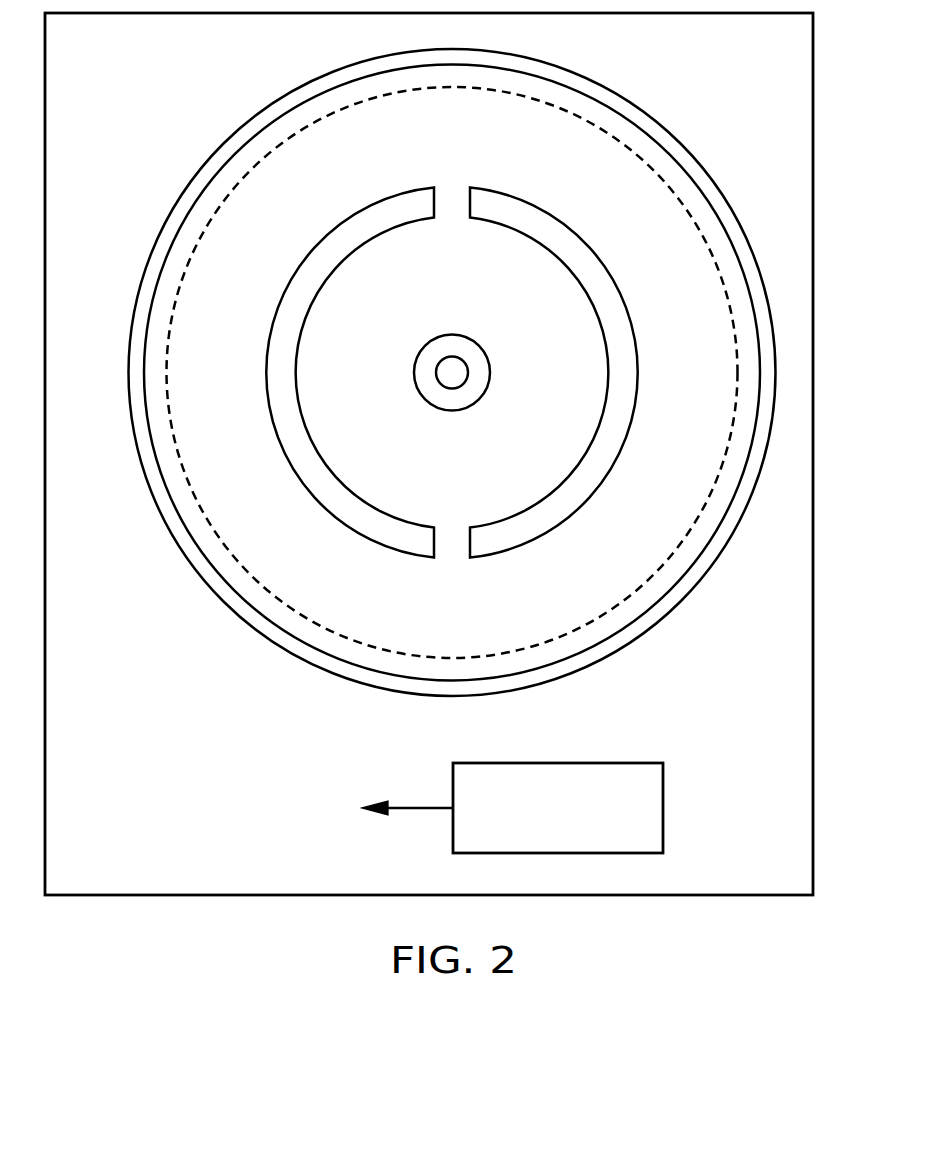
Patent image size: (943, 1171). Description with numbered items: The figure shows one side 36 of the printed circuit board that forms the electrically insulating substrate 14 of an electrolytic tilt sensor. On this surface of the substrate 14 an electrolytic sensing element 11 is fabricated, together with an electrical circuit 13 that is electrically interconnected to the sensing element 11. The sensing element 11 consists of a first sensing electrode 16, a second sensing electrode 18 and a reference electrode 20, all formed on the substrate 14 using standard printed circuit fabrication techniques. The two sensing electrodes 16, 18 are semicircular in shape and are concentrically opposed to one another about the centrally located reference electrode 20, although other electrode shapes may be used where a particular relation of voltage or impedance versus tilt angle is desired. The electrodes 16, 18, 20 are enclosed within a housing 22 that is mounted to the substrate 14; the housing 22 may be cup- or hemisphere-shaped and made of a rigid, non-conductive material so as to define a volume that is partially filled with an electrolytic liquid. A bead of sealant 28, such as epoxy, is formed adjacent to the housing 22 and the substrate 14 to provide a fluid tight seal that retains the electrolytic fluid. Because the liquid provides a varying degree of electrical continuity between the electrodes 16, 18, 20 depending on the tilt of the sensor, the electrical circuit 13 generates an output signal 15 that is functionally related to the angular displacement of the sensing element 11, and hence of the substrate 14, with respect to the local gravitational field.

The electrolytic sensing element 11 is at (512, 377).
The electrical circuit 13 is at (663, 808).
The electrically insulating substrate 14 is at (813, 120).
The output signal 15 is at (410, 806).
The first sensing electrode 16 is at (266, 373).
The second sensing electrode 18 is at (638, 373).
The reference electrode 20 is at (490, 373).
The housing 22 is at (612, 105).
The bead of sealant 28 is at (253, 628).
The side of substrate 36 is at (181, 75).